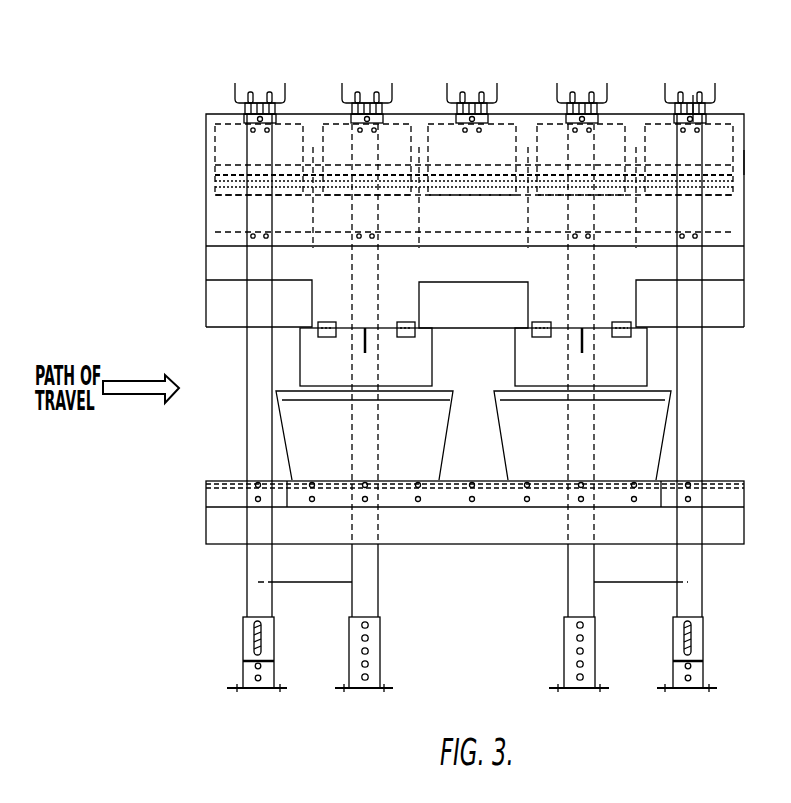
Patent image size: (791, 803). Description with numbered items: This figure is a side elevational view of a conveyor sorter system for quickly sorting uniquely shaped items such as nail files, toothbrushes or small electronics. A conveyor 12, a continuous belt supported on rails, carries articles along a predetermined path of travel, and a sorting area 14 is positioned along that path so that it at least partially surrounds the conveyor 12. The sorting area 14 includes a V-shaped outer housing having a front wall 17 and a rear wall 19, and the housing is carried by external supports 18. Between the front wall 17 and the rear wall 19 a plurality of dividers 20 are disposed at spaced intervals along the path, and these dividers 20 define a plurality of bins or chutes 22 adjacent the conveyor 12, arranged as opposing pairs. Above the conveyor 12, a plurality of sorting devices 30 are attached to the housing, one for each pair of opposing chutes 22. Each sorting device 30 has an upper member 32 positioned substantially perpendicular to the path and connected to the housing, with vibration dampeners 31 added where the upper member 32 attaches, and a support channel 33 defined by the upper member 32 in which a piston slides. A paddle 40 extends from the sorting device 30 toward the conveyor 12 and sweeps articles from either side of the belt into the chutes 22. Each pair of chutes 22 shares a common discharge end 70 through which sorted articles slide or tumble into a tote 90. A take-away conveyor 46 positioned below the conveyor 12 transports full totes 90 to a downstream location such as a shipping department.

The conveyor 12 is at (225, 198).
The sorting area 14 is at (170, 298).
The front wall 17 is at (206, 137).
The external supports 18 is at (702, 446).
The rear wall 19 is at (744, 162).
The dividers 20 is at (313, 213).
The chutes 22 is at (385, 212).
The sorting devices 30 is at (232, 108).
The vibration dampeners 31 is at (272, 100).
The upper member 32 is at (284, 89).
The support channel 33 is at (368, 107).
The paddle 40 is at (225, 150).
The take-away conveyor 46 is at (229, 481).
The common discharge end 70 is at (437, 347).
The tote 90 is at (293, 420).